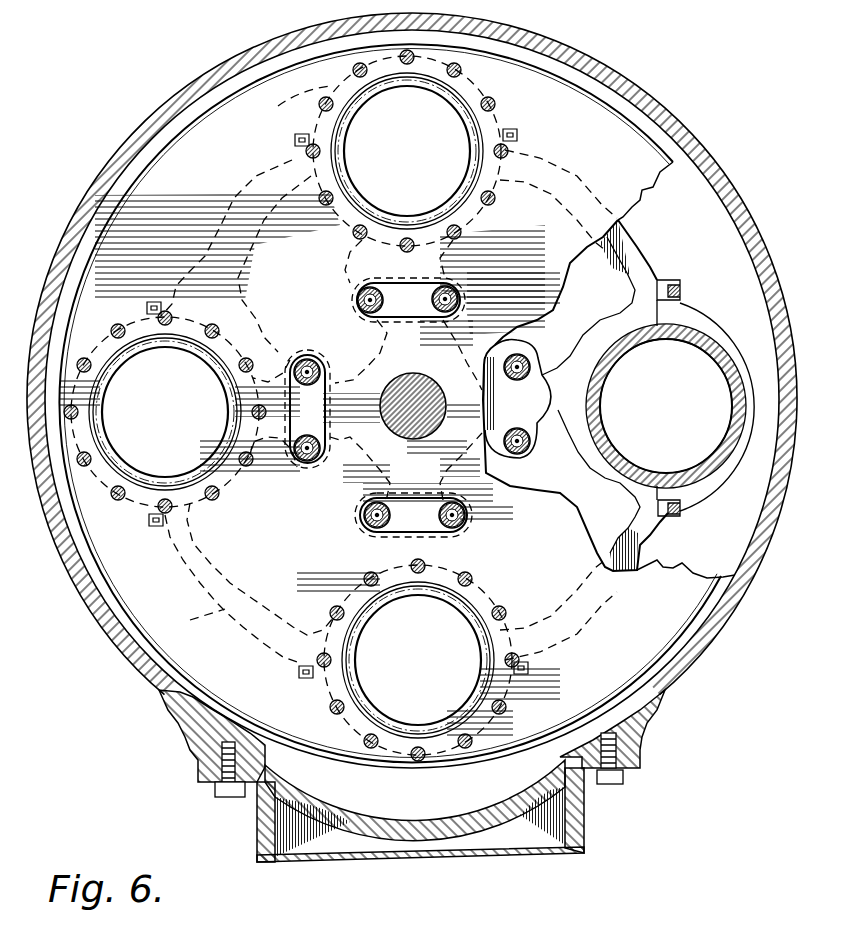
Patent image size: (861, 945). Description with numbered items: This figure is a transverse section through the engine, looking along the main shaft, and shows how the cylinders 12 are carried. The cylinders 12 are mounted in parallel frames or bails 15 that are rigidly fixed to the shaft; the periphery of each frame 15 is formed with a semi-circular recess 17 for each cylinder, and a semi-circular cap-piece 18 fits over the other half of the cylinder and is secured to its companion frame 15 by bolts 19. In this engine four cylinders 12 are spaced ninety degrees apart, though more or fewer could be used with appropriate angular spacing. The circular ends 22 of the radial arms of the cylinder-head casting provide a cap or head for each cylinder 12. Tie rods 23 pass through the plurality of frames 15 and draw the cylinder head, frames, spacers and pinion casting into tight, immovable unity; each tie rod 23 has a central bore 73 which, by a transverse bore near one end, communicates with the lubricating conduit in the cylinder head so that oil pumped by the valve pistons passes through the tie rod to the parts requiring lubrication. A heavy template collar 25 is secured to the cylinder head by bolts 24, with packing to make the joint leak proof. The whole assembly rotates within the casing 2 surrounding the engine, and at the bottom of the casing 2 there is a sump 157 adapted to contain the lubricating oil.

The casing 2 is at (535, 35).
The cylinders 12 is at (452, 116).
The frames or bails 15 is at (233, 195).
The semi-circular recess 17 is at (603, 348).
The cap-piece 18 is at (717, 328).
The bolts 19 is at (684, 284).
The circular end of extension 22 is at (293, 104).
The tie rods 23 is at (360, 290).
The bolts 24 is at (462, 70).
The template collar 25 is at (653, 192).
The central bore 73 is at (357, 306).
The sump 157 is at (512, 822).